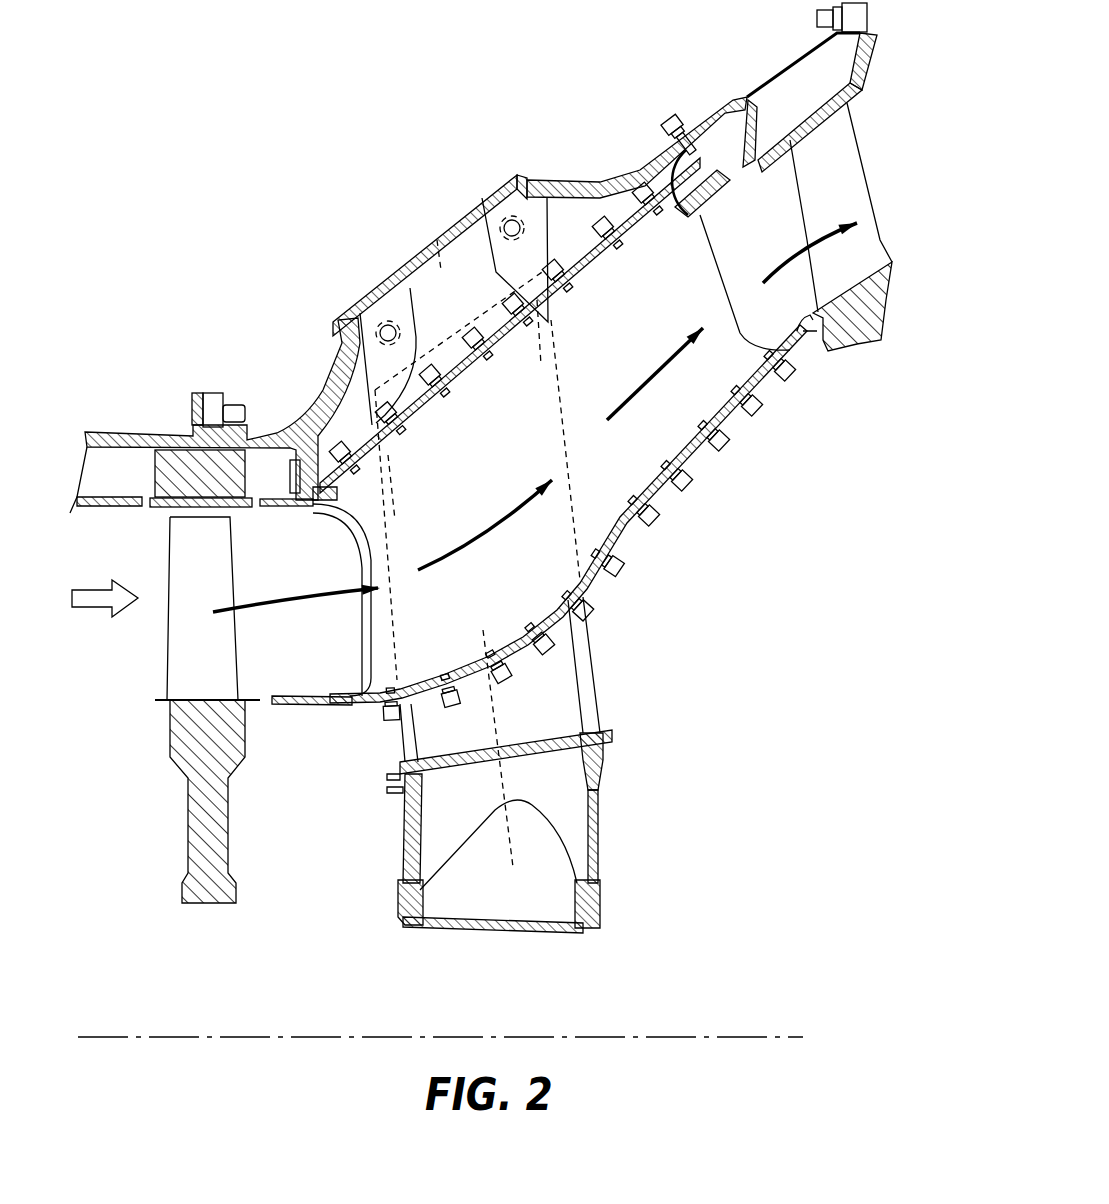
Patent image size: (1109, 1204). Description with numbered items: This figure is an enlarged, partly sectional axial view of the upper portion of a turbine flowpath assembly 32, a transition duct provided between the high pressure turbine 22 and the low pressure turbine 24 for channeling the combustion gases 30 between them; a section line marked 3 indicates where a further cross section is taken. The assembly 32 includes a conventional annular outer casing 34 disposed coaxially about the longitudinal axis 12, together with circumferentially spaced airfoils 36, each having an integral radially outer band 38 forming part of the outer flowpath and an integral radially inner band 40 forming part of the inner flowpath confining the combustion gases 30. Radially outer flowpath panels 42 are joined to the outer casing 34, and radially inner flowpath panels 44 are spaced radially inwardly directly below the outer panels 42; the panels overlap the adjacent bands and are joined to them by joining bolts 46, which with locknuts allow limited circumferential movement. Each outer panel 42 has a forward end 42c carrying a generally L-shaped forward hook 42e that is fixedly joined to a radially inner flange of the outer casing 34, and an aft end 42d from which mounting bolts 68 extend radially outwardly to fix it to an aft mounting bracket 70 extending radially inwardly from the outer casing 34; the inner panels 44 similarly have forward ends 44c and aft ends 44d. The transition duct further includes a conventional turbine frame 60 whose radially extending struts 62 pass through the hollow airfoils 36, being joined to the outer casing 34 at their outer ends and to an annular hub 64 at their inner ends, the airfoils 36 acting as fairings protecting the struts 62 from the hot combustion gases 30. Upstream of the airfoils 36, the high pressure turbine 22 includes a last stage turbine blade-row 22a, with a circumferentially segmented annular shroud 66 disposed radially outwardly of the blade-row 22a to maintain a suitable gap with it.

The longitudinal axis 12 is at (700, 1037).
The high pressure turbine 22 is at (168, 710).
The last stage turbine blade-row 22a is at (170, 668).
The low pressure turbine 24 is at (868, 163).
The combustion gases 30 is at (100, 583).
The turbine flowpath assembly 32 is at (353, 730).
The outer casing 34 is at (323, 393).
The airfoils 36 is at (368, 648).
The outer band 38 is at (607, 283).
The inner band 40 is at (655, 484).
The outer flowpath panel 42 is at (593, 268).
The forward end of outer panel 42c is at (284, 510).
The aft end of outer panel 42d is at (724, 188).
The forward hook of outer panel 42e is at (318, 505).
The inner flowpath panel 44 is at (662, 497).
The forward end of inner panel 44c is at (304, 694).
The aft end of inner panel 44d is at (792, 332).
The joining bolts 46 is at (592, 238).
The turbine frame 60 is at (655, 742).
The struts 62 is at (600, 683).
The annular hub 64 is at (600, 848).
The shroud 66 is at (238, 510).
The mounting bolts 68 is at (637, 187).
The aft mounting bracket 70 is at (700, 170).
The section line 3- 3 is at (436, 232).